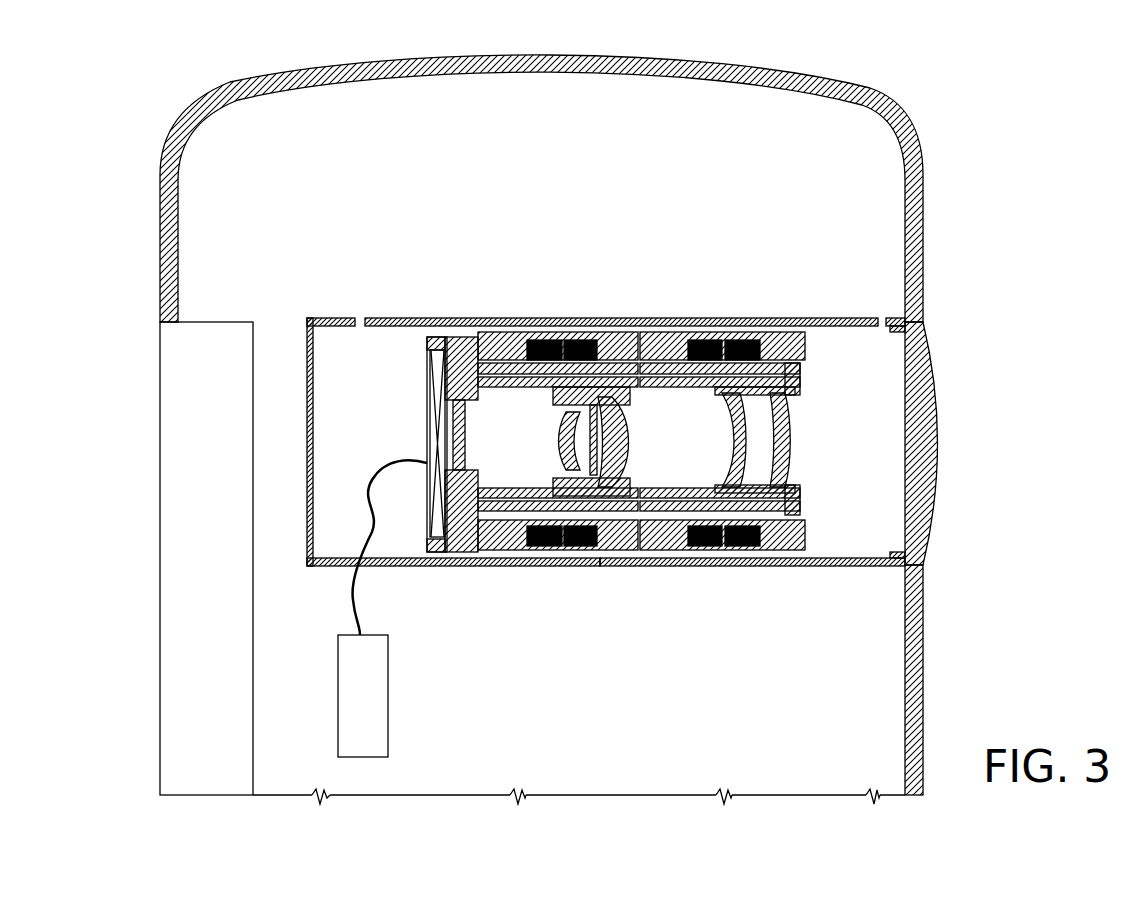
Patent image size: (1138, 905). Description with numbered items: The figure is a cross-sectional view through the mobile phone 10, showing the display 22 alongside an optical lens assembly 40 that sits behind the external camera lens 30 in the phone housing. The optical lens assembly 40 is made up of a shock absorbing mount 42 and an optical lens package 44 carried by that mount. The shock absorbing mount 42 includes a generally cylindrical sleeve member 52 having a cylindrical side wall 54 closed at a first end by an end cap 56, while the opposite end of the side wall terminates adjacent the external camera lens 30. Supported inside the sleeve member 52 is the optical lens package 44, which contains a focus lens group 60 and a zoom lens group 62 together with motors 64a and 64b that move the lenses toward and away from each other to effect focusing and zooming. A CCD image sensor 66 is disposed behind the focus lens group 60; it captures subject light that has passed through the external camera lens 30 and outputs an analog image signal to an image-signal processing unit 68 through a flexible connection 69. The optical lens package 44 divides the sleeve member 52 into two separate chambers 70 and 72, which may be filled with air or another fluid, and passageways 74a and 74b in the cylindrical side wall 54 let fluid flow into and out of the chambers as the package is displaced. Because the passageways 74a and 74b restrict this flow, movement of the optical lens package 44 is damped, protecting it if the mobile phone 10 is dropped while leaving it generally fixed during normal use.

The mobile phone 10 is at (858, 96).
The display 22 is at (167, 362).
The external camera lens 30 is at (940, 360).
The optical lens assembly 40 is at (614, 389).
The shock absorbing mount 42 is at (423, 306).
The optical lens package 44 is at (818, 468).
The sleeve member 52 is at (412, 566).
The cylindrical side wall 54 is at (670, 566).
The end cap 56 is at (307, 458).
The focus lens group 60 is at (612, 447).
The zoom lens group 62 is at (783, 436).
The motor 64a is at (543, 345).
The motor 64b is at (704, 345).
The CCD image sensor 66 is at (428, 410).
The image-signal processing unit 68 is at (388, 673).
The flexible connection 69 is at (352, 590).
The chamber 70 is at (880, 463).
The chamber 72 is at (334, 470).
The passageway 74a is at (882, 318).
The passageway 74b is at (360, 318).